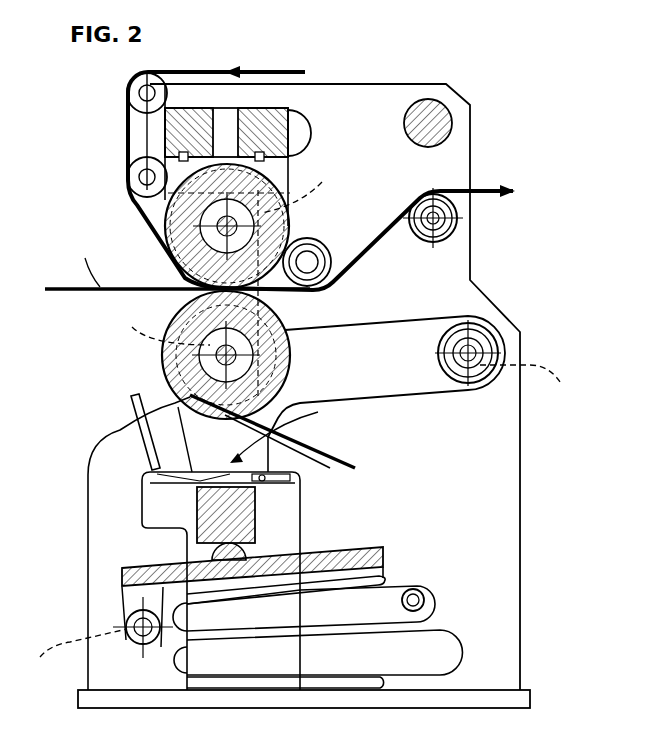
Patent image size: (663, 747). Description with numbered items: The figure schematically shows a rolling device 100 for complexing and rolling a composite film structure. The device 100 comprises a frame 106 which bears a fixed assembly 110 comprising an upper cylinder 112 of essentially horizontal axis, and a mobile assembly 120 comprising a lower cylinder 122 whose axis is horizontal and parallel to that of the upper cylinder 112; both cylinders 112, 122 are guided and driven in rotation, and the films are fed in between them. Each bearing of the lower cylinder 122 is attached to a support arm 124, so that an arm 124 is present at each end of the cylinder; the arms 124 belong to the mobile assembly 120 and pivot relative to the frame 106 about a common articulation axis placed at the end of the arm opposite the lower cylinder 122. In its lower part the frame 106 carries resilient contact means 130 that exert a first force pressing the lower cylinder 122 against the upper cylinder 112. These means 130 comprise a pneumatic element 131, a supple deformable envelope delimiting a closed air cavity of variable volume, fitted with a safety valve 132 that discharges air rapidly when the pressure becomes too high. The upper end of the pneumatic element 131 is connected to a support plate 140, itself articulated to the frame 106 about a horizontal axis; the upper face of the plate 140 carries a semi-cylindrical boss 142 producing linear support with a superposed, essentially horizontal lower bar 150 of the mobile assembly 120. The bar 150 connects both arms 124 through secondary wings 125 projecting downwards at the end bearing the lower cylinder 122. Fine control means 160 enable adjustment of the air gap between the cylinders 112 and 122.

The rolling device 100 is at (492, 141).
The frame 106 is at (423, 262).
The fixed assembly 110 is at (178, 137).
The upper cylinder 112 is at (180, 222).
The mobile assembly 120 is at (150, 376).
The lower cylinder 122 is at (165, 347).
The support arm 124 is at (378, 340).
The secondary wing 125 is at (198, 440).
The resilient contact means 130 is at (330, 603).
The pneumatic element 131 is at (413, 648).
The safety valve 132 is at (417, 598).
The support plate 140 is at (328, 562).
The semi-cylindrical boss 142 is at (222, 550).
The lower bar 150 is at (210, 512).
The fine control means 160 is at (330, 468).